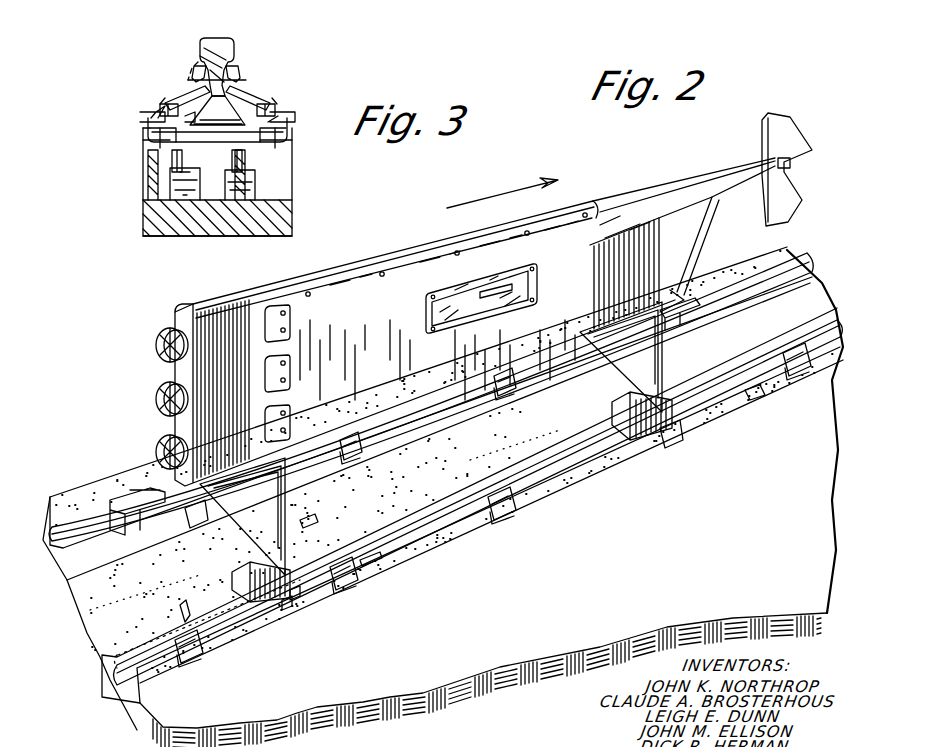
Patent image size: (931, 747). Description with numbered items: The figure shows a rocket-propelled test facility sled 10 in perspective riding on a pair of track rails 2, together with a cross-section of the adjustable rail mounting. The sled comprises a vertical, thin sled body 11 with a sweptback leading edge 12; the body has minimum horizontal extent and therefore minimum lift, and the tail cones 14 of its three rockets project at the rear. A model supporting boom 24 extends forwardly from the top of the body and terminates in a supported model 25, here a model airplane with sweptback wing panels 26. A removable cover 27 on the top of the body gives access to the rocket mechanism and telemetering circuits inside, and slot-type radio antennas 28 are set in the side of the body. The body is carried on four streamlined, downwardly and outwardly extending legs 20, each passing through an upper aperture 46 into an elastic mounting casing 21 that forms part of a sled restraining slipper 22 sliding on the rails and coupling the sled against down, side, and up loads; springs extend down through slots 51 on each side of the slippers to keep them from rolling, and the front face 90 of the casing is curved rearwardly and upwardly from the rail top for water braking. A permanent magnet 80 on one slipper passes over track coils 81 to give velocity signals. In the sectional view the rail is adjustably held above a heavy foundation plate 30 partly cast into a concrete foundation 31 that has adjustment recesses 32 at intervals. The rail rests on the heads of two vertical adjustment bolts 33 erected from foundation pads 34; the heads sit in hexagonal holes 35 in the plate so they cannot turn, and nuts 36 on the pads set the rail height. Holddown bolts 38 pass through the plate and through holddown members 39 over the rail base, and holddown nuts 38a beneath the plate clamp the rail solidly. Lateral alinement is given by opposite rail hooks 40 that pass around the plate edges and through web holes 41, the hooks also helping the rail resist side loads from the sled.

In FIG. 3, the track rails 2 is at (230, 50).
In FIG. 2, the track rails 2 is at (140, 655).
In FIG. 2, the sled 10 is at (379, 244).
In FIG. 2, the sled body 11 is at (425, 352).
In FIG. 2, the sweptback leading edge 12 is at (705, 246).
In FIG. 2, the tail cones 14 is at (165, 395).
In FIG. 2, the legs 20 is at (630, 365).
In FIG. 2, the elastic mounting casing 21 is at (680, 430).
In FIG. 2, the sled restraining slippers 22 is at (690, 410).
In FIG. 2, the model supporting boom 24 is at (715, 188).
In FIG. 2, the supported model 25 is at (820, 140).
In FIG. 2, the sweptback wing panels 26 is at (782, 205).
In FIG. 2, the removable cover 27 is at (568, 207).
In FIG. 2, the radio antennas 28 is at (502, 296).
In FIG. 3, the foundation plate 30 is at (236, 114).
In FIG. 3, the concrete foundation 31 is at (293, 213).
In FIG. 2, the concrete foundation 31 is at (210, 662).
In FIG. 2, the adjustment recesses 32 is at (325, 520).
In FIG. 3, the vertical adjustment bolts 33 is at (250, 165).
In FIG. 3, the foundation pads 34 is at (168, 186).
In FIG. 3, the hexagonal holes 35 is at (170, 160).
In FIG. 3, the nuts 36 is at (258, 176).
In FIG. 3, the holddown bolts 38 is at (274, 104).
In FIG. 2, the holddown bolts 38 is at (370, 562).
In FIG. 3, the holddown nuts 38a is at (285, 146).
In FIG. 3, the holddown members 39 is at (275, 117).
In FIG. 2, the holddown members 39 is at (184, 612).
In FIG. 3, the rail hooks 40 is at (236, 96).
In FIG. 2, the rail hooks 40 is at (800, 374).
In FIG. 3, the web holes 41 is at (183, 51).
In FIG. 2, the upper aperture 46 is at (665, 385).
In FIG. 2, the slots 51 is at (612, 405).
In FIG. 2, the permanent magnet 80 is at (295, 600).
In FIG. 2, the track coils 81 is at (288, 612).
In FIG. 2, the front face 90 is at (700, 390).